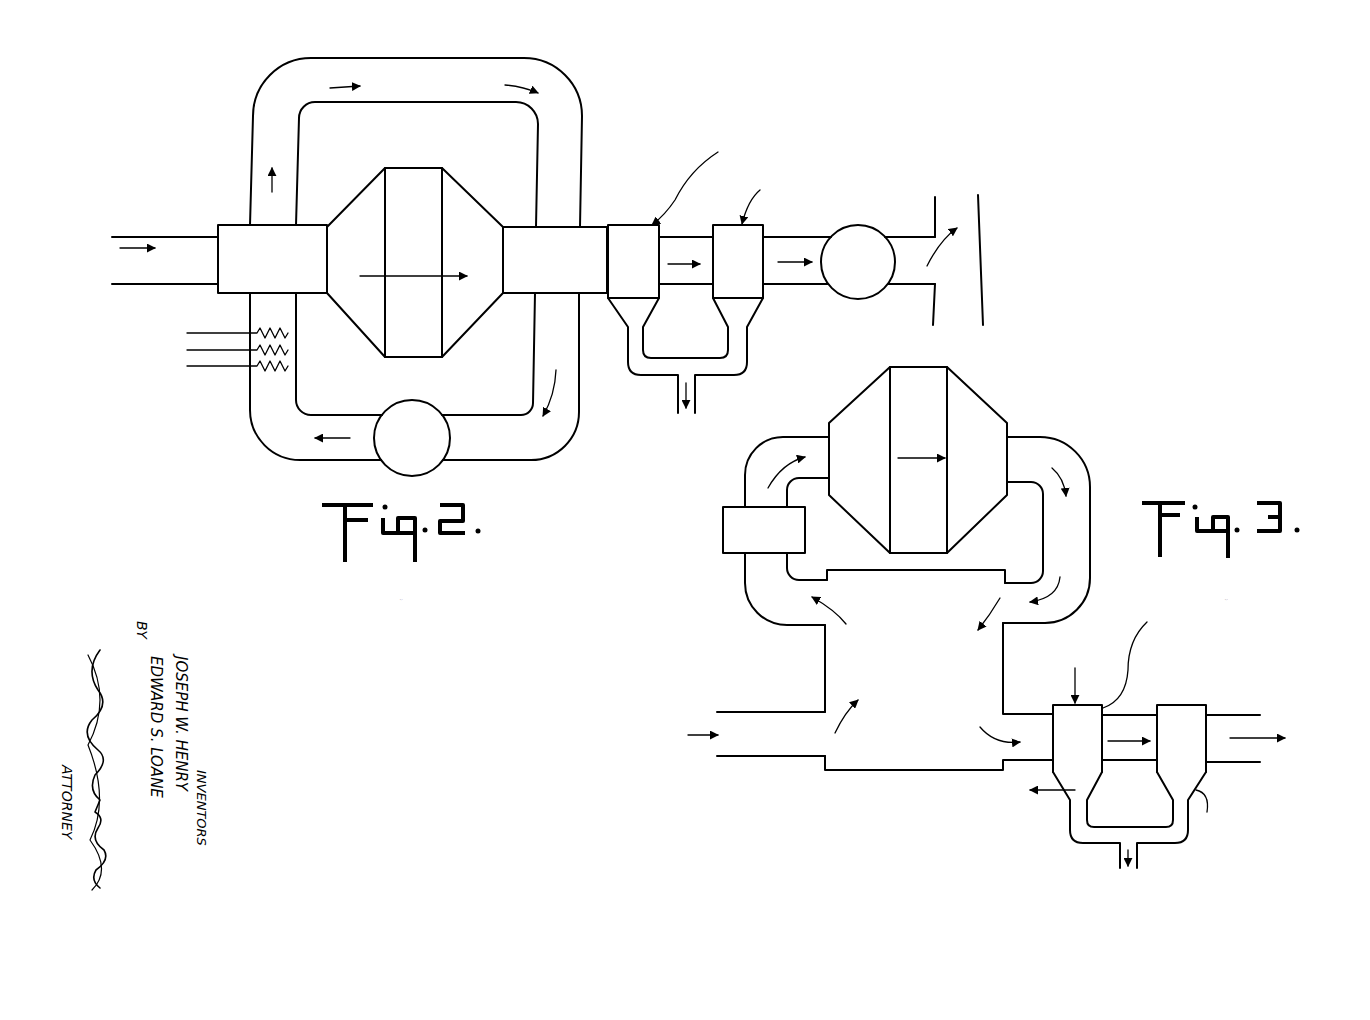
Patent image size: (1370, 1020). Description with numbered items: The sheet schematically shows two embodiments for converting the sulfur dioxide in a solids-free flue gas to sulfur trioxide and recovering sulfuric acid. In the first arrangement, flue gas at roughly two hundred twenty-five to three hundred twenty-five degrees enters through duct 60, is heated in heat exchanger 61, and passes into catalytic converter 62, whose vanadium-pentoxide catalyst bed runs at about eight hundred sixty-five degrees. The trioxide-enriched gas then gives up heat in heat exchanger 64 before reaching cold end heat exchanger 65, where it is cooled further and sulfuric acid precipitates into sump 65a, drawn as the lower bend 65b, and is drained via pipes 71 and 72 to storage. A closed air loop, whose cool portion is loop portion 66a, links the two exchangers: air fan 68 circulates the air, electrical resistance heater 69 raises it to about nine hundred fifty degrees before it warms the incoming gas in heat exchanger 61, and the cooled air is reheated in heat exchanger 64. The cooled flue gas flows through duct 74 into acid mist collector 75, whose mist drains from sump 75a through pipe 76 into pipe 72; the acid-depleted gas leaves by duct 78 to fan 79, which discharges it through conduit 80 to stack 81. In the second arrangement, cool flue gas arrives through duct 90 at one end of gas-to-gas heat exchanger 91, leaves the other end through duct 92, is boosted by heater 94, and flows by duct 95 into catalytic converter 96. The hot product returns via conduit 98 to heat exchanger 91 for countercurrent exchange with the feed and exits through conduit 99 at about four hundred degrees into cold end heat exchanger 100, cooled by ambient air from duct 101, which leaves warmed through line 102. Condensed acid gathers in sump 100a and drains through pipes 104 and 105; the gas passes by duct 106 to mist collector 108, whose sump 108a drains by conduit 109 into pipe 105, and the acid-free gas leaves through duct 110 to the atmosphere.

In FIG. 2, the duct 60 is at (125, 237).
In FIG. 2, the heat exchanger 61 is at (232, 225).
In FIG. 2, the catalytic converter 62 is at (366, 176).
In FIG. 2, the heat exchanger 64 is at (596, 227).
In FIG. 2, the cold end heat exchanger 65 is at (659, 299).
In FIG. 2, the sump 65a is at (617, 320).
In FIG. 2, the sump 65b is at (251, 407).
In FIG. 2, the heat-exchange fluid circulating loop portion 66a is at (258, 91).
In FIG. 2, the air fan 68 is at (445, 467).
In FIG. 2, the electrical resistance heater 69 is at (193, 368).
In FIG. 2, the pipe 71 is at (645, 385).
In FIG. 2, the pipe 72 is at (697, 394).
In FIG. 2, the duct 74 is at (672, 236).
In FIG. 2, the acid mist collector 75 is at (766, 232).
In FIG. 2, the sump 75a is at (757, 310).
In FIG. 2, the pipe 76 is at (749, 349).
In FIG. 2, the duct 78 is at (813, 288).
In FIG. 2, the fan 79 is at (877, 231).
In FIG. 2, the conduit 80 is at (884, 291).
In FIG. 2, the stack 81 is at (982, 214).
In FIG. 3, the duct 90 is at (754, 712).
In FIG. 3, the heat exchanger 91 is at (825, 646).
In FIG. 3, the duct 92 is at (750, 597).
In FIG. 3, the heater 94 is at (723, 512).
In FIG. 3, the duct 95 is at (745, 474).
In FIG. 3, the catalytic converter 96 is at (961, 381).
In FIG. 3, the conduit 98 is at (1063, 446).
In FIG. 3, the conduit 99 is at (1026, 713).
In FIG. 3, the cold end heat exchanger 100 is at (1103, 708).
In FIG. 3, the sump 100a is at (1100, 791).
In FIG. 3, the duct 101 is at (1078, 692).
In FIG. 3, the line 102 is at (1058, 797).
In FIG. 3, the pipe 104 is at (1074, 845).
In FIG. 3, the pipe 105 is at (1120, 856).
In FIG. 3, the duct 106 is at (1140, 714).
In FIG. 3, the mist collector 108 is at (1193, 705).
In FIG. 3, the sump 108a is at (1202, 780).
In FIG. 3, the conduit 109 is at (1187, 845).
In FIG. 3, the duct 110 is at (1243, 716).